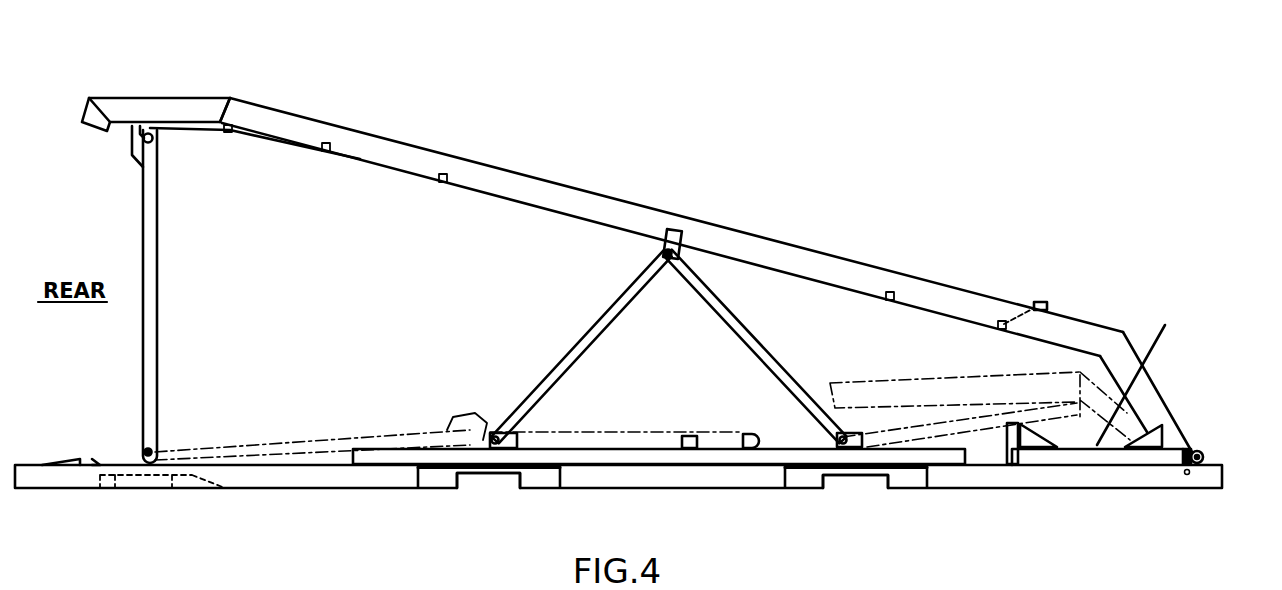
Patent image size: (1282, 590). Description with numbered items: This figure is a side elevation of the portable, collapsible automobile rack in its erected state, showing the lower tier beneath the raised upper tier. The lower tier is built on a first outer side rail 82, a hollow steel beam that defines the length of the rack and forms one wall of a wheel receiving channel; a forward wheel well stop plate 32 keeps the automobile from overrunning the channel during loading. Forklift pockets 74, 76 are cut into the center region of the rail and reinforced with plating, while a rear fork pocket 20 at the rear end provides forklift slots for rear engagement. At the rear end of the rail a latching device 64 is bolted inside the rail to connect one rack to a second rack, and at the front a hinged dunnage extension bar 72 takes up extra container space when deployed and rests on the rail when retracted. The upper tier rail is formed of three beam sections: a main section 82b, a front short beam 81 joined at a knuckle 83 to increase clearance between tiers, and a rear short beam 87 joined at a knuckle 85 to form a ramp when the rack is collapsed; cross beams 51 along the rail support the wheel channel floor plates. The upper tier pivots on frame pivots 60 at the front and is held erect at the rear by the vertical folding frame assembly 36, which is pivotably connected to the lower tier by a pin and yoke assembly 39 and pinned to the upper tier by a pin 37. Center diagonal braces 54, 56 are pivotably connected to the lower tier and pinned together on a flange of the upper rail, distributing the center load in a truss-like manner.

The rear fork pocket 20 is at (152, 484).
The forward wheel well stop plate 32 is at (1037, 304).
The vertical folding frame assembly 36 is at (158, 288).
The pin 37 is at (146, 130).
The pin and yoke assembly 39 is at (158, 450).
The cross beams 51 is at (222, 133).
The center diagonal brace 54 is at (587, 332).
The center diagonal brace 56 is at (760, 334).
The frame pivot 60 is at (1190, 472).
The latching device 64 is at (75, 460).
The hinged dunnage extension bar 72 is at (1165, 325).
The forklift pocket 74 is at (860, 482).
The forklift pocket 76 is at (496, 480).
The short beam 81 is at (1163, 400).
The first outer side rail 82 is at (338, 462).
The main section of upper-tier outer side rail 82b is at (617, 200).
The knuckle 83 is at (1124, 331).
The knuckle 85 is at (228, 97).
The short beam 87 is at (162, 101).